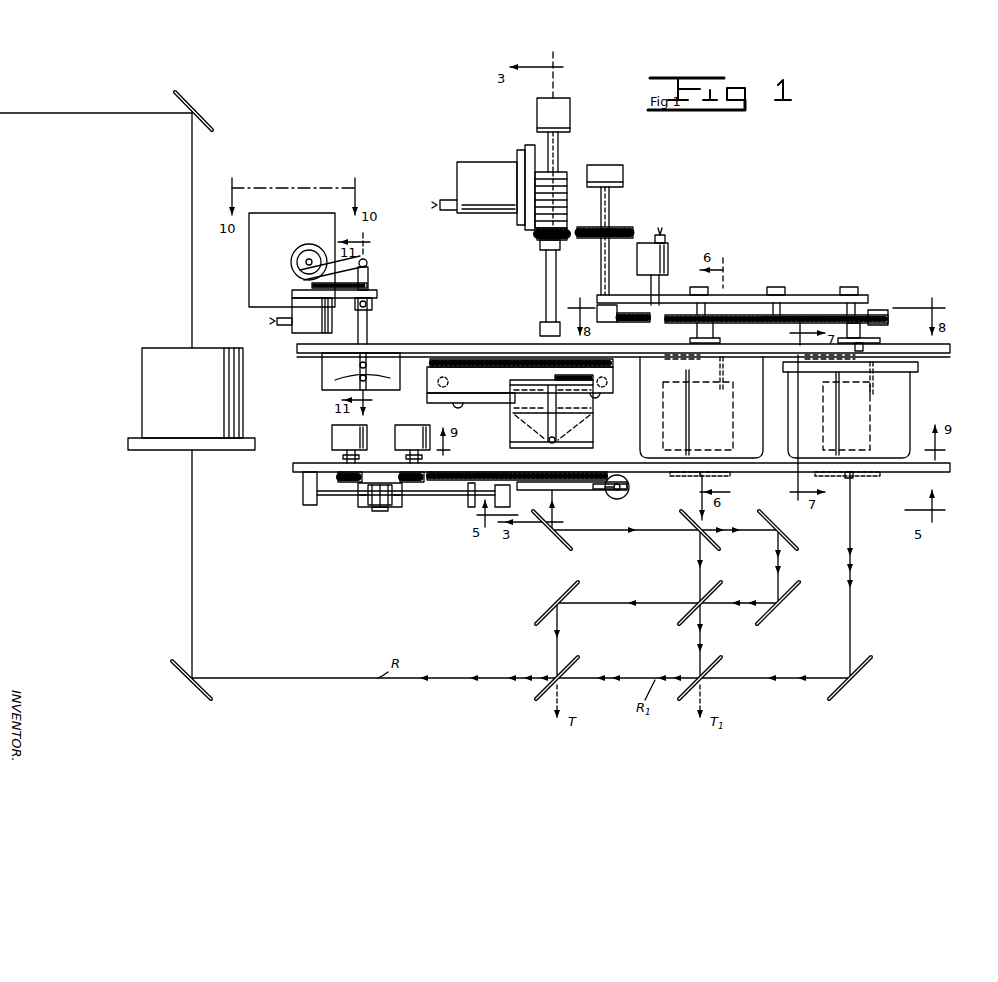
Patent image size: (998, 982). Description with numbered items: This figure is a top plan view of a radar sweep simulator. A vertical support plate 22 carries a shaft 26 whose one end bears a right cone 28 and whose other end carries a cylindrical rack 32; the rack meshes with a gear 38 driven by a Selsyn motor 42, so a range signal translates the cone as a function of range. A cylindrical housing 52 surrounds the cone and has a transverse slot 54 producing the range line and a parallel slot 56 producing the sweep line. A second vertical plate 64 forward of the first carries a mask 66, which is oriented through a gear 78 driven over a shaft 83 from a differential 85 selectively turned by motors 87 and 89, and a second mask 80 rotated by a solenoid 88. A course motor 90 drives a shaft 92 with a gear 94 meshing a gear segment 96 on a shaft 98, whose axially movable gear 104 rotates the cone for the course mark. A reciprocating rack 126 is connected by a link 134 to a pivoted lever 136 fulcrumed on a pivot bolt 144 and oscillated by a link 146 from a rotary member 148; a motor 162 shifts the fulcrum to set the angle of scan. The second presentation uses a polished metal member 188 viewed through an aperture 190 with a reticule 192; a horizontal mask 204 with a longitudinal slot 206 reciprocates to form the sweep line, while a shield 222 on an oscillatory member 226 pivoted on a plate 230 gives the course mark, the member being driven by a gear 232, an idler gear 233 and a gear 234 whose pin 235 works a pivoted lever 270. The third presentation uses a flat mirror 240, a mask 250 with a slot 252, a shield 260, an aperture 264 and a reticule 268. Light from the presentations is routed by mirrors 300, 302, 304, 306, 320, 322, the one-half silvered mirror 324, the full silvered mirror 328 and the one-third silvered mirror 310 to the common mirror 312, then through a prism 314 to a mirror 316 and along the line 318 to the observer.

The vertical support plate 22 is at (415, 349).
The shaft 26 is at (546, 275).
The right cone 28 is at (595, 410).
The cylindrical rack 32 is at (568, 177).
The gear 38 is at (557, 150).
The Selsyn motor 42 is at (470, 163).
The cylindrical housing 52 is at (594, 436).
The slot 54 is at (511, 428).
The slot 56 is at (556, 445).
The second vertical plate 64 is at (952, 467).
The mask 66 is at (545, 481).
The gear 78 is at (478, 478).
The second mask 80 is at (590, 487).
The shaft 83 is at (449, 498).
The differential 85 is at (363, 512).
The motor 87 is at (332, 440).
The solenoid 88 is at (621, 495).
The motor 89 is at (409, 425).
The motor 90 is at (650, 243).
The shaft 92 is at (651, 270).
The gear 94 is at (651, 322).
The gear segment 96 is at (634, 322).
The shaft 98 is at (601, 268).
The gear 104 is at (620, 230).
The rack 126 is at (485, 388).
The link 134 is at (425, 361).
The pivoted lever 136 is at (368, 335).
The pivot bolt 144 is at (373, 303).
The link 146 is at (366, 262).
The rotary member 148 is at (298, 268).
The motor 162 is at (305, 329).
The metal member 188 is at (736, 440).
The aperture 190 is at (688, 477).
The reticule 192 is at (728, 476).
The horizontal mask 204 is at (640, 440).
The longitudinal slot 206 is at (689, 440).
The shield 222 is at (725, 378).
The oscillatory member 226 is at (722, 338).
The plate 230 is at (825, 295).
The gear 232 is at (724, 317).
The idler gear 233 is at (790, 314).
The gear 234 is at (873, 316).
The pin 235 is at (862, 332).
The flat mirror 240 is at (876, 430).
The mask 250 is at (912, 415).
The longitudinal slot 252 is at (839, 430).
The shield 260 is at (912, 383).
The aperture 264 is at (878, 477).
The reticule 268 is at (835, 476).
The pivoted lever 270 is at (866, 343).
The mirror 300 is at (541, 541).
The mirror 302 is at (694, 538).
The mirror 304 is at (714, 590).
The mirror 306 is at (576, 590).
The mirror 310 is at (575, 668).
The mirror 312 is at (196, 677).
The prism 314 is at (150, 398).
The mirror 316 is at (206, 111).
The line 318 is at (88, 115).
The mirror 320 is at (786, 545).
The mirror 322 is at (790, 590).
The one-half silvered mirror 324 is at (724, 666).
The full silvered mirror 328 is at (867, 668).